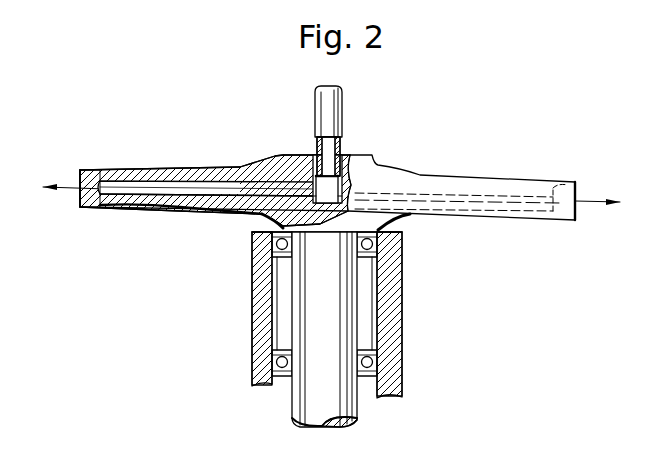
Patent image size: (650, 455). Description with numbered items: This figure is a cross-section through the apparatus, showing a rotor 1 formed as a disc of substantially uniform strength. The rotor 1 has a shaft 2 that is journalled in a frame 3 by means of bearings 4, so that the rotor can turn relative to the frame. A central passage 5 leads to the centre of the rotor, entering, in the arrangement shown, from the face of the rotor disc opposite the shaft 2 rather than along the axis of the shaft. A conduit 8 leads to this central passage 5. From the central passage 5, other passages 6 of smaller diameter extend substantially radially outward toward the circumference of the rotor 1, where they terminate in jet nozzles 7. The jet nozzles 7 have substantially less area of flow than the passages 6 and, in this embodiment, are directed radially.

The rotor 1 is at (387, 185).
The shaft 2 is at (317, 312).
The frame 3 is at (382, 299).
The bearings 4 is at (378, 244).
The central passage 5 is at (322, 187).
The passages 6 is at (170, 190).
The jet nozzles 7 is at (90, 207).
The conduit 8 is at (328, 108).